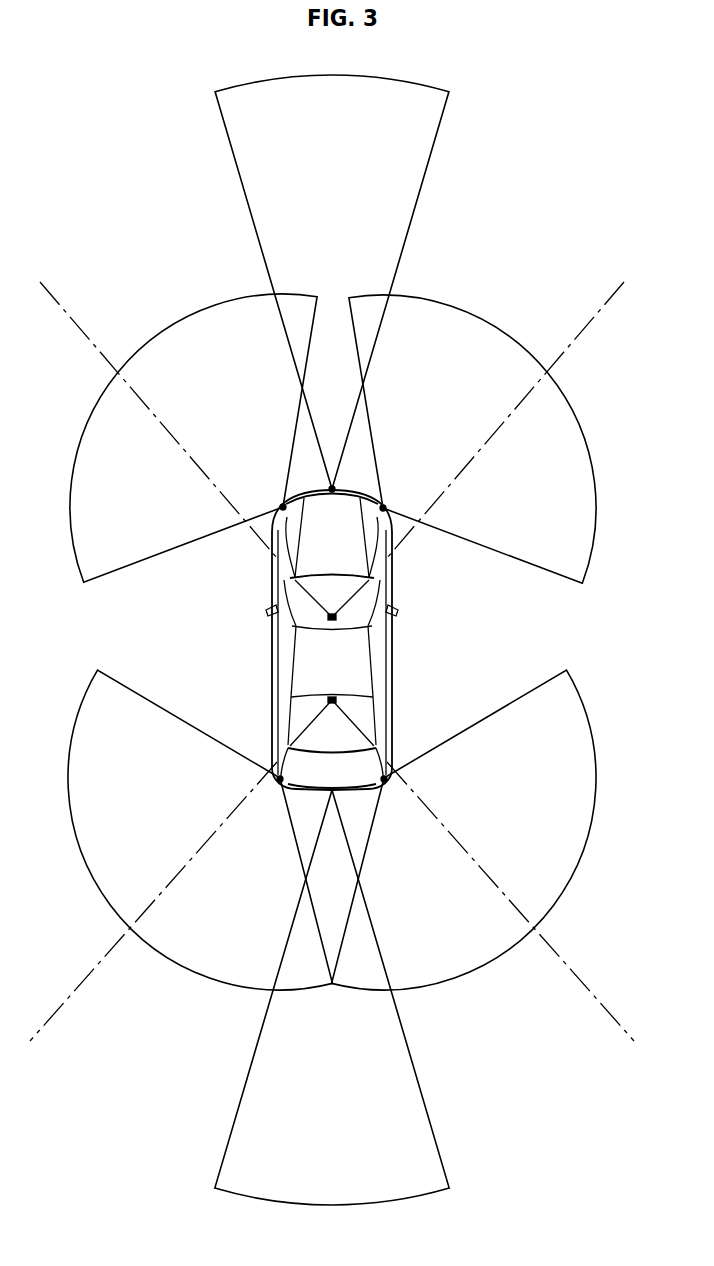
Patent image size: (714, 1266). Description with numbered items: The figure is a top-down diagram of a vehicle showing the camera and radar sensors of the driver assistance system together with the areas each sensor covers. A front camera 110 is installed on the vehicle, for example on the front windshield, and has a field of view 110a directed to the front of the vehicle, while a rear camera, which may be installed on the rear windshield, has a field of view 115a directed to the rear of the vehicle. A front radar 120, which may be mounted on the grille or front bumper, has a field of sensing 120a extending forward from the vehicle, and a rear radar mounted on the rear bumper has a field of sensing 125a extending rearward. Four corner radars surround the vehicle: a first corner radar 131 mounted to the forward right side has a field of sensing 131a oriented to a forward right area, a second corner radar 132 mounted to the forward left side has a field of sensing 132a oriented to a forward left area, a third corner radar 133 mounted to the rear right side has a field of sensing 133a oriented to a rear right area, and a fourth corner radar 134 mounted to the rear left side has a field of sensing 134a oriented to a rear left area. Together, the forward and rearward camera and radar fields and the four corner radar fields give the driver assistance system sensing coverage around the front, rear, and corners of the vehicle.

The front camera 110 is at (336, 617).
The field of view 110a is at (597, 314).
The field of view 115a is at (597, 1000).
The front radar 120 is at (333, 489).
The field of sensing 120a is at (403, 183).
The field of sensing 125a is at (403, 1088).
The first corner radar 131 is at (384, 508).
The field of sensing 131a is at (494, 338).
The second corner radar 132 is at (282, 507).
The field of sensing 132a is at (168, 338).
The third corner radar 133 is at (384, 781).
The field of sensing 133a is at (555, 893).
The fourth corner radar 134 is at (280, 781).
The field of sensing 134a is at (110, 893).